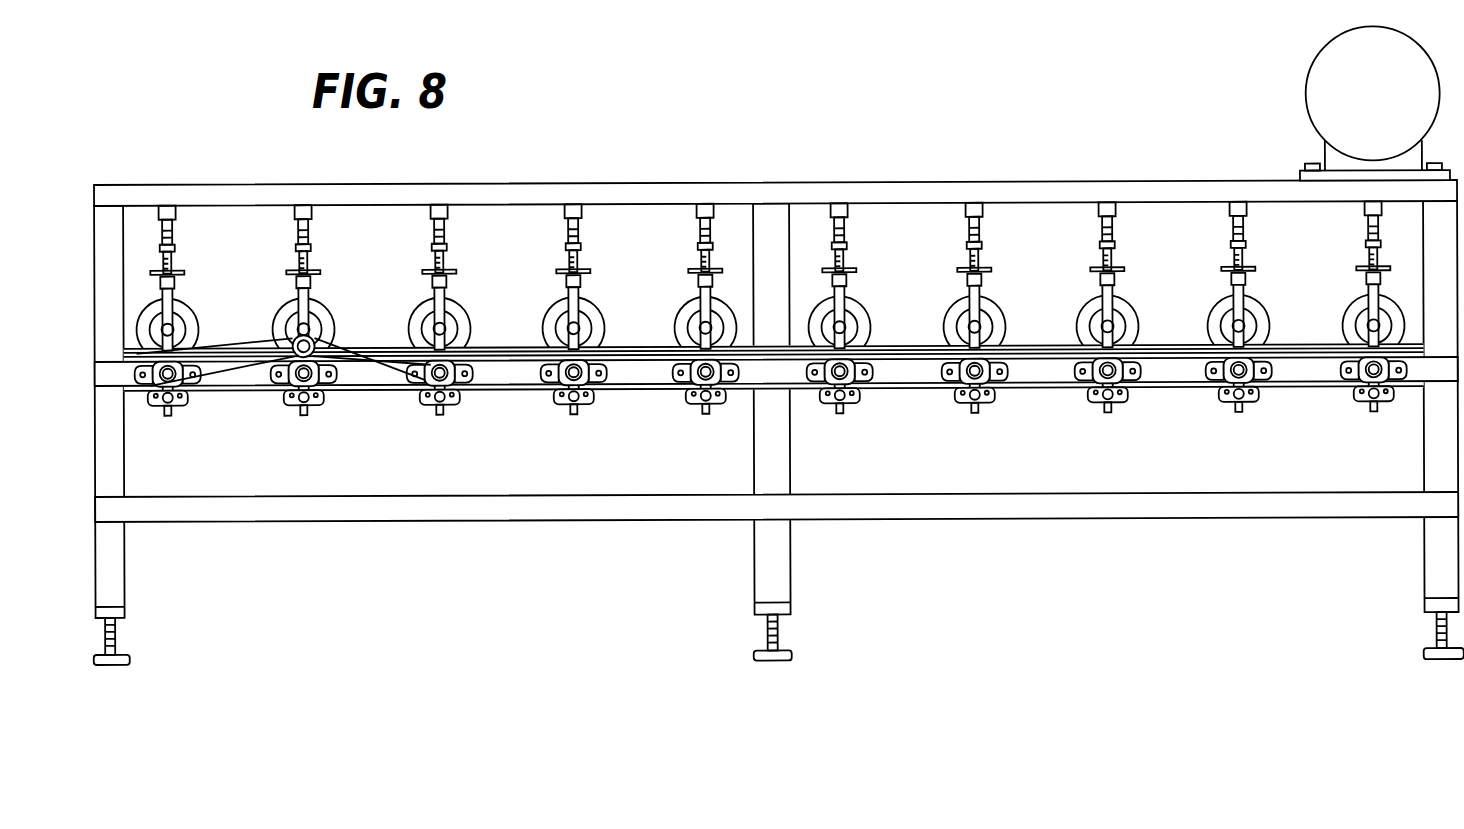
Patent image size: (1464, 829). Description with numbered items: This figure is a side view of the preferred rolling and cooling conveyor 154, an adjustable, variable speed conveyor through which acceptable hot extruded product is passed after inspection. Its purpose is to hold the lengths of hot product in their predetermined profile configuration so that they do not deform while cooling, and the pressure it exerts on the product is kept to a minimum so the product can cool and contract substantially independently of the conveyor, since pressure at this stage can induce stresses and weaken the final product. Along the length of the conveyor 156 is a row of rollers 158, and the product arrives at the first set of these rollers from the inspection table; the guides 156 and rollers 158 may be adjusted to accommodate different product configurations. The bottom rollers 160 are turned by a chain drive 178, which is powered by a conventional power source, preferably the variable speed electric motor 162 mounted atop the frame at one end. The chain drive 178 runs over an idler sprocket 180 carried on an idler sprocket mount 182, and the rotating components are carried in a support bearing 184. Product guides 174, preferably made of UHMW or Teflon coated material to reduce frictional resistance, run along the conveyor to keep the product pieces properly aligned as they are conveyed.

The rolling and cooling conveyor 154 is at (826, 158).
The guides 156 is at (490, 350).
The rollers 158 is at (190, 303).
The bottom rollers 160 is at (319, 422).
The variable speed electric motor 162 is at (1312, 76).
The product guides 174 is at (628, 351).
The chain drive 178 is at (372, 391).
The idler sprocket 180 is at (290, 361).
The idler sprocket mount 182 is at (313, 342).
The support bearing 184 is at (671, 423).